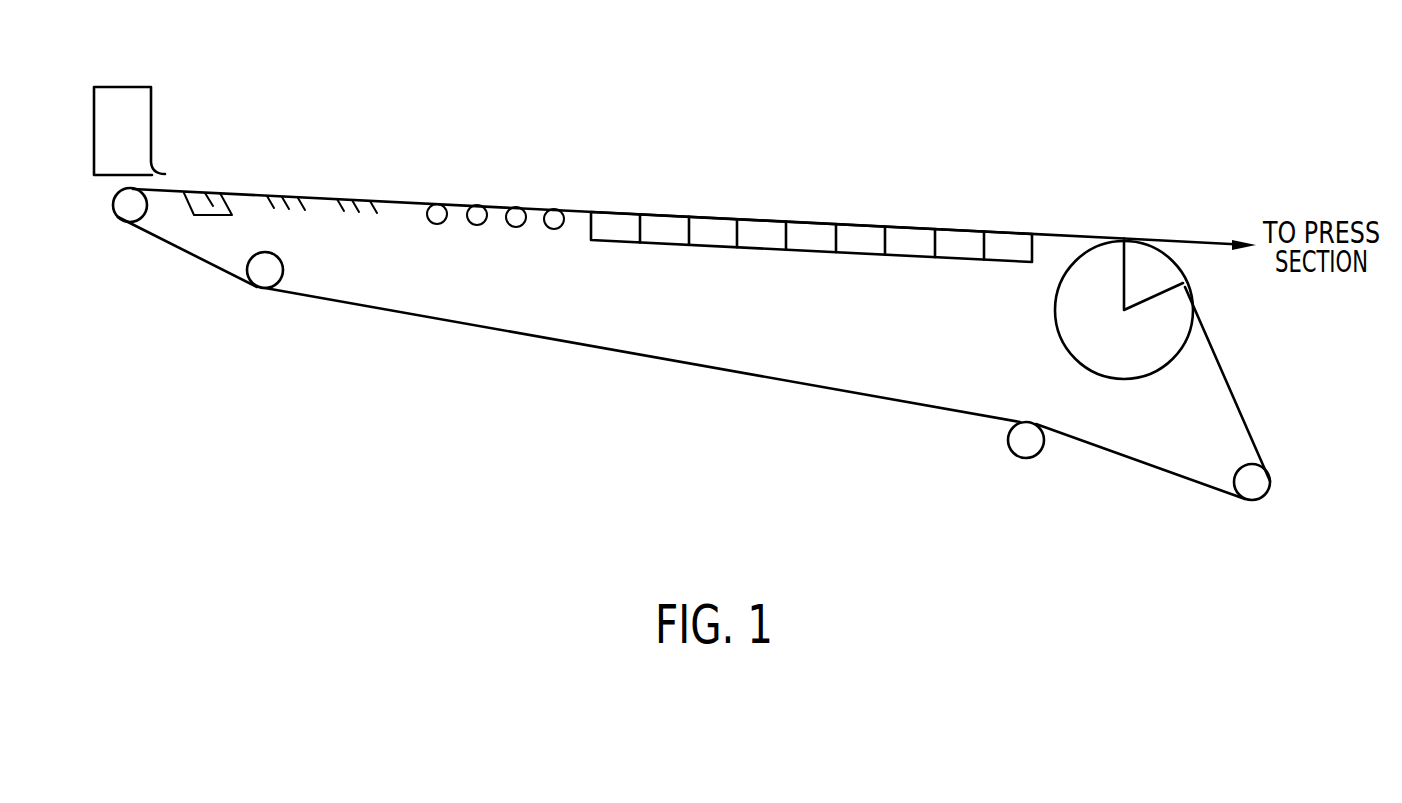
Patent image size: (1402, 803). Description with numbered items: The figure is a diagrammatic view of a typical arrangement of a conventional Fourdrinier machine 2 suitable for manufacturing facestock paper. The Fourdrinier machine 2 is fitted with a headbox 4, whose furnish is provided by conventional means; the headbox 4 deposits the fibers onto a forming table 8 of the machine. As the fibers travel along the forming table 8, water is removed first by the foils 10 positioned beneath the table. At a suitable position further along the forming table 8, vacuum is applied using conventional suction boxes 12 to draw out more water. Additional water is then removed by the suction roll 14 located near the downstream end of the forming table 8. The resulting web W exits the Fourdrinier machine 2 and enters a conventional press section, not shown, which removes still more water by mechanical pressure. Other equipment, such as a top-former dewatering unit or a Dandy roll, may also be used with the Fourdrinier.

The Fourdrinier machine 2 is at (240, 302).
The headbox 4 is at (128, 87).
The forming table 8 is at (409, 200).
The foils 10 is at (318, 199).
The suction boxes 12 is at (895, 271).
The suction roll 14 is at (1056, 318).
The web W is at (1198, 238).